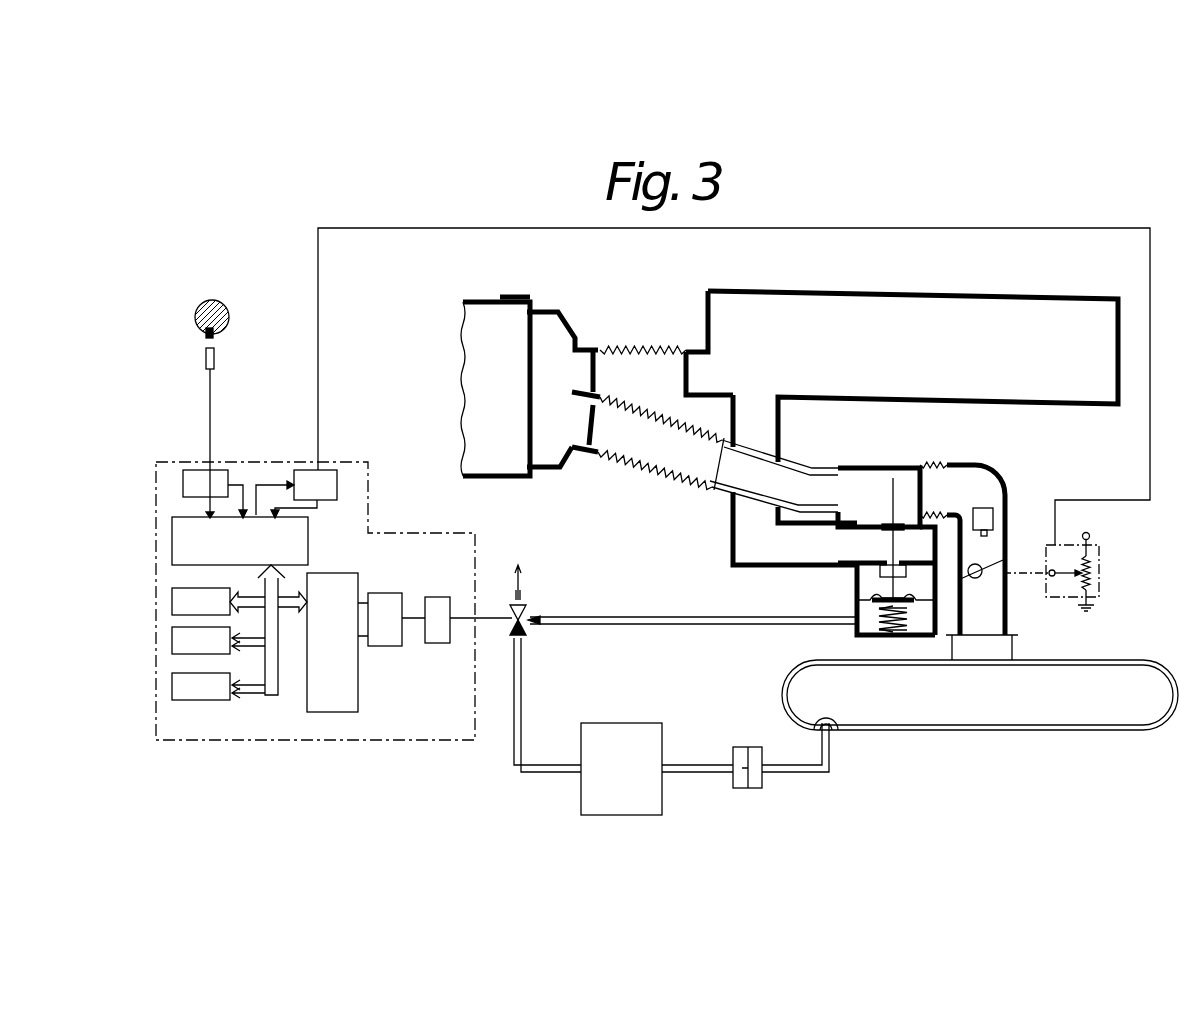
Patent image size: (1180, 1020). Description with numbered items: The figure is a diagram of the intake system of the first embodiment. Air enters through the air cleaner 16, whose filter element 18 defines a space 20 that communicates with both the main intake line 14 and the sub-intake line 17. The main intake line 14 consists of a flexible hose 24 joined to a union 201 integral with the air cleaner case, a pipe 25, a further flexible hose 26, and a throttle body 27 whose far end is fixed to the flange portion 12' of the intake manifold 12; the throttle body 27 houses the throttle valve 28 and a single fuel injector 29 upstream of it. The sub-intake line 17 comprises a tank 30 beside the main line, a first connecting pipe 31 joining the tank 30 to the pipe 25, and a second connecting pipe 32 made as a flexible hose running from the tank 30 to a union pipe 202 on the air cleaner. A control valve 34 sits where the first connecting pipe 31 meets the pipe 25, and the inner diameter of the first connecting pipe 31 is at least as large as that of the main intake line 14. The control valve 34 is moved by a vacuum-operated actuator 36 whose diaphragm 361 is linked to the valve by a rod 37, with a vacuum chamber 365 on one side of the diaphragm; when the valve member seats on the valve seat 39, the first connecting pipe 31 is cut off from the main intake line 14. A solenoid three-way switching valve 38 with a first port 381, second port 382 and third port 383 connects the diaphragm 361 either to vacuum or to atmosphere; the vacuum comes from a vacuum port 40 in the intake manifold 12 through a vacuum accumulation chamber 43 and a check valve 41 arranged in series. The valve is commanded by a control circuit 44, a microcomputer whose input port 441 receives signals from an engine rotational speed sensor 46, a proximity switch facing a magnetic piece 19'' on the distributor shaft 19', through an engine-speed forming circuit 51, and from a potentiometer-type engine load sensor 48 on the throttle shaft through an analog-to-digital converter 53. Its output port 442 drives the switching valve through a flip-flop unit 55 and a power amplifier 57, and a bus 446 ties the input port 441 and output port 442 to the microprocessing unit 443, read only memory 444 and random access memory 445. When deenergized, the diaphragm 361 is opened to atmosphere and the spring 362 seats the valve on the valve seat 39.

The intake manifold 12 is at (980, 678).
The flange portion 12' is at (1003, 640).
The main intake line 14 is at (909, 551).
The air cleaner 16 is at (503, 296).
The sub-intake line 17 is at (913, 388).
The filter element 18 is at (530, 300).
The distributor shaft 19' is at (233, 306).
The magnetic piece 19'' is at (242, 332).
The space 20 is at (556, 332).
The union 201 is at (578, 450).
The union pipe 202 is at (582, 348).
The flexible hose 24 is at (666, 480).
The pipe 25 is at (846, 468).
The flexible hose 26 is at (940, 463).
The throttle body 27 is at (1001, 486).
The throttle valve 28 is at (1000, 566).
The fuel injector 29 is at (994, 520).
The tank 30 is at (854, 292).
The first connecting pipe 31 is at (748, 562).
The second connecting pipe 32 is at (656, 348).
The control valve 34 is at (908, 470).
The actuator 36 is at (861, 629).
The diaphragm 361 is at (860, 598).
The spring 362 is at (905, 641).
The vacuum chamber 365 is at (886, 641).
The rod 37 is at (880, 565).
The three-way switching valve 38 is at (667, 656).
The first port 381 is at (536, 626).
The second port 382 is at (523, 642).
The third port 383 is at (530, 605).
The valve seat 39 is at (892, 539).
The vacuum port 40 is at (840, 730).
The check valve 41 is at (753, 772).
The vacuum accumulation chamber 43 is at (625, 722).
The control circuit 44 is at (322, 742).
The input port 441 is at (310, 530).
The output port 442 is at (360, 702).
The microprocessing unit 443 is at (185, 594).
The read only memory 444 is at (208, 656).
The random access memory 445 is at (204, 701).
The bus 446 is at (280, 690).
The engine rotational speed sensor 46 is at (215, 362).
The engine load sensor 48 is at (1100, 572).
The engine-speed forming circuit 51 is at (230, 472).
The analog-to-digital converter 53 is at (340, 478).
The flip-flop unit 55 is at (392, 593).
The power amplifier 57 is at (437, 644).